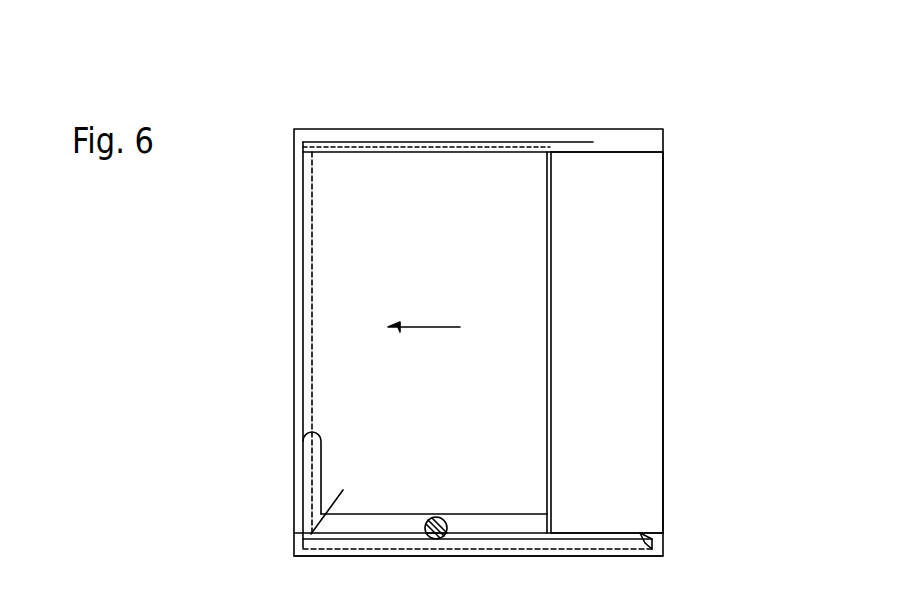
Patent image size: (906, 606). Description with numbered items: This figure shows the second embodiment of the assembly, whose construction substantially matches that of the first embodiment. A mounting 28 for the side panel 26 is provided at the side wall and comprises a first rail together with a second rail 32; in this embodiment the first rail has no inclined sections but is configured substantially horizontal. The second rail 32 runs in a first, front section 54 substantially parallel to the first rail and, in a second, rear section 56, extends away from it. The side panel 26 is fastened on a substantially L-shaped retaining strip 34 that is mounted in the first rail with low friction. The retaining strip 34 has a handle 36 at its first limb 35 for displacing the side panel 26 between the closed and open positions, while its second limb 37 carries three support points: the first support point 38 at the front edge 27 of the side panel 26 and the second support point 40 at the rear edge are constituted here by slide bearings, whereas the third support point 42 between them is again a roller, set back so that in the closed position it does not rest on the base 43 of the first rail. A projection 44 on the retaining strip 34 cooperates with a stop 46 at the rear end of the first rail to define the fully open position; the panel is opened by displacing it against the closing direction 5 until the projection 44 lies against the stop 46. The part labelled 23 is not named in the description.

The sliding direction arrow 5 is at (424, 316).
The sliding panel 23 is at (551, 228).
The side panel 26 is at (522, 296).
The front edge of the side panel 27 is at (302, 253).
The mounting 28 is at (684, 134).
The second rail 32 is at (505, 146).
The retaining strip 34 is at (393, 520).
The first limb 35 is at (320, 446).
The handle 36 is at (597, 549).
The second limb 37 is at (480, 520).
The first support point 38 is at (341, 502).
The second support point 40 is at (535, 530).
The third support point 42 is at (437, 516).
The base of the first rail 43 is at (530, 546).
The projection 44 is at (440, 535).
The stop 46 is at (643, 534).
The first, front section of the second rail 54 is at (365, 142).
The second, rear section of the second rail 56 is at (592, 142).